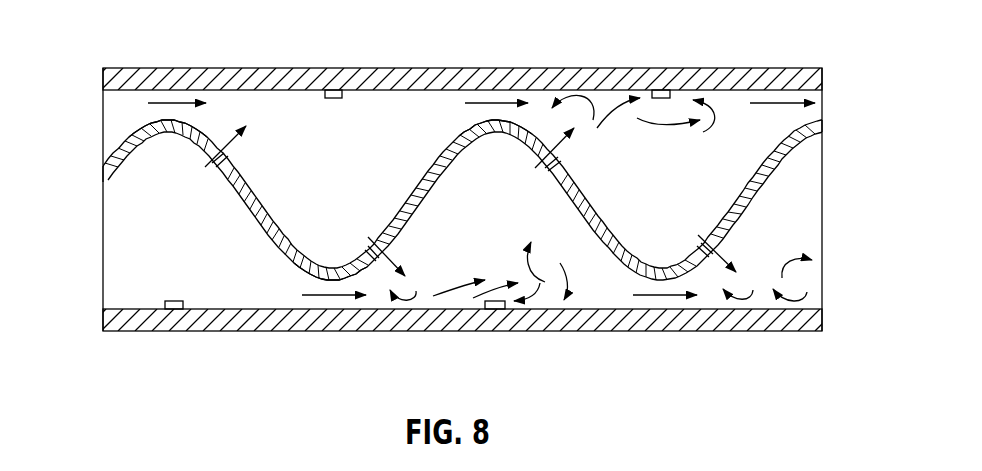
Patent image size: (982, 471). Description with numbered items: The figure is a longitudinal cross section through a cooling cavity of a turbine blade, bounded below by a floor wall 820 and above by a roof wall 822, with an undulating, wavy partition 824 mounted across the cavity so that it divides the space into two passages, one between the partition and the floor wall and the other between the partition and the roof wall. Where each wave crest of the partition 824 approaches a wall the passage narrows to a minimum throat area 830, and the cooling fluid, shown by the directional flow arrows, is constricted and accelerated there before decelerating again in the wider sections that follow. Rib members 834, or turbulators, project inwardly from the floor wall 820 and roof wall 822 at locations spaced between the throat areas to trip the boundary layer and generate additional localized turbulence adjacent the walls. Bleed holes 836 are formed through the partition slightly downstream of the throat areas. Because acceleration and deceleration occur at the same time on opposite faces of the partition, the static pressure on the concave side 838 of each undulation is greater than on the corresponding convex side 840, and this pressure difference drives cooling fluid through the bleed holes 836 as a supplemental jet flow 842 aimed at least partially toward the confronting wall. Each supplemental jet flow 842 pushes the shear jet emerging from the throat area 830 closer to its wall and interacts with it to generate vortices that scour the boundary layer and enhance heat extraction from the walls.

The floor wall 820 is at (762, 322).
The roof wall 822 is at (748, 75).
The partition 824 is at (103, 163).
The minimum throat area 830 is at (490, 96).
The rib member 834 is at (332, 91).
The bleed hole 836 is at (376, 250).
The concave side 838 is at (176, 134).
The convex side 840 is at (142, 120).
The supplemental jet flow 842 is at (232, 124).